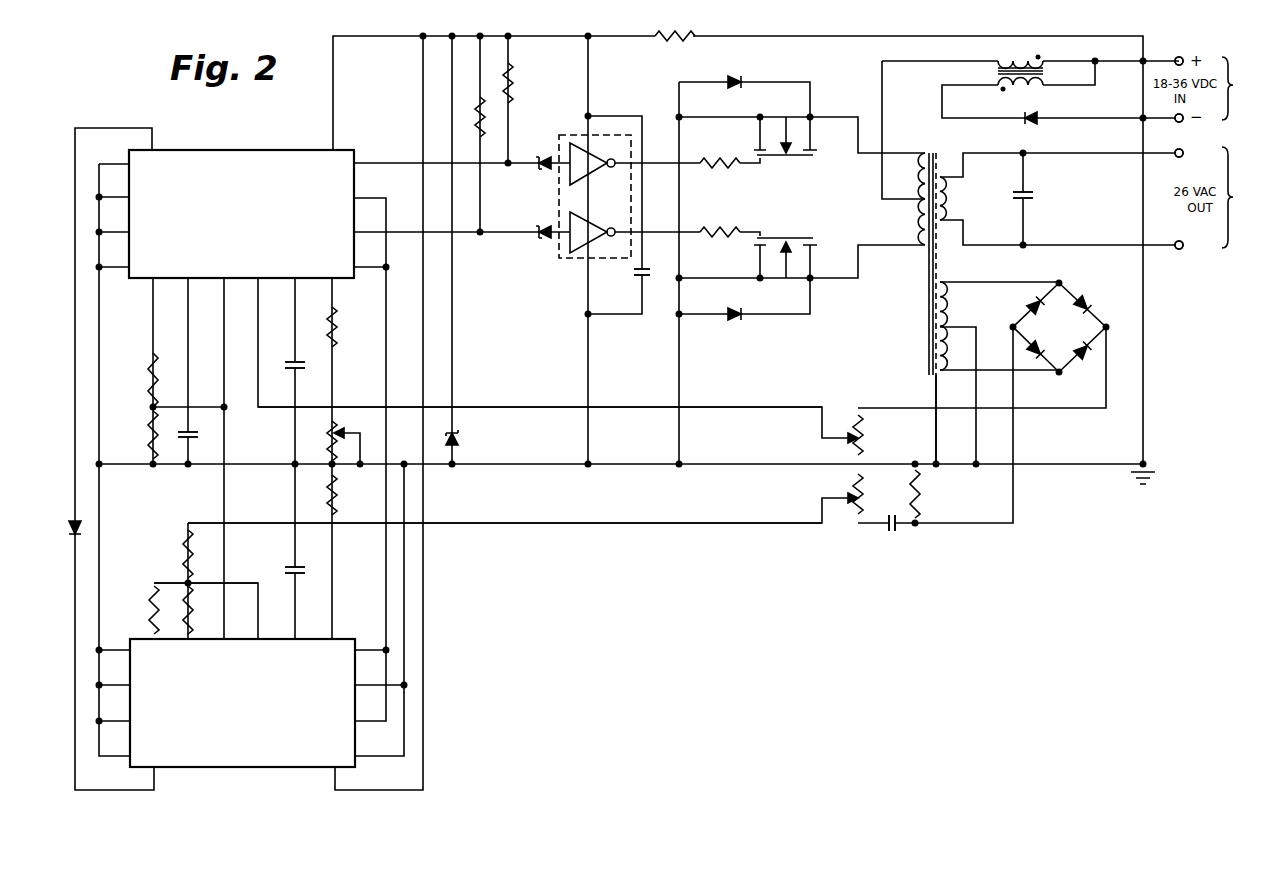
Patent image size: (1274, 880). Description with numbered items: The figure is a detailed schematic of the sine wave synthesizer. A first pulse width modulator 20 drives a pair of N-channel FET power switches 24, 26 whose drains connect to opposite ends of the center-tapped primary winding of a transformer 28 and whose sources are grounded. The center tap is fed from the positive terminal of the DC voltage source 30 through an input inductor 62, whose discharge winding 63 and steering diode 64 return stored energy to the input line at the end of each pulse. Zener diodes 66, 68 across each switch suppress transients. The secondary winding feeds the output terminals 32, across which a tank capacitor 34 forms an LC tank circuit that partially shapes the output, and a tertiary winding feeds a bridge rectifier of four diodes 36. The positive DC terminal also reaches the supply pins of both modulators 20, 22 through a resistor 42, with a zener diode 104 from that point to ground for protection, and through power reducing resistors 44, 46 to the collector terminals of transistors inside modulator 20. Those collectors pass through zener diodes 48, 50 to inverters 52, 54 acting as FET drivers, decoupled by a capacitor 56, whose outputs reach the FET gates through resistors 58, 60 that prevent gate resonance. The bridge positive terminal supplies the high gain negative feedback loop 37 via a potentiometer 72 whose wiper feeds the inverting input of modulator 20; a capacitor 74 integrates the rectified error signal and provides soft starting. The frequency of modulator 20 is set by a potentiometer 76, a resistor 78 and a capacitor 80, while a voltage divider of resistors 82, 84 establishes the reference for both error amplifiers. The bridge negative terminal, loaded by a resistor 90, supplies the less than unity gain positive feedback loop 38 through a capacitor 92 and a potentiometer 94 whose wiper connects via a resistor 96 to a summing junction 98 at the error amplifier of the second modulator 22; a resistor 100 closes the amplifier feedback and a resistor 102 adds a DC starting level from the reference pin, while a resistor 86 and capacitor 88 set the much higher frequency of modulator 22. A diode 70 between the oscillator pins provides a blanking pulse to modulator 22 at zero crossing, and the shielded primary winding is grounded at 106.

The first pulse width modulator 20 is at (224, 226).
The second pulse width modulator 22 is at (224, 711).
The FET power switch 24 is at (813, 95).
The FET power switch 26 is at (812, 296).
The transformer 28 is at (938, 165).
The DC voltage source 30 is at (1218, 89).
The output terminals 32 is at (1218, 198).
The tank capacitor 34 is at (1030, 200).
The bridge rectifier diodes 36 is at (1072, 338).
The negative feedback loop 37 is at (515, 405).
The positive feedback loop 38 is at (518, 525).
The resistor 42 is at (672, 42).
The power reducing resistor 44 is at (520, 70).
The power reducing resistor 46 is at (487, 105).
The zener diode 48 is at (538, 170).
The zener diode 50 is at (538, 240).
The inverter 52 is at (597, 170).
The inverter 54 is at (598, 223).
The capacitor 56 is at (633, 278).
The resistor 58 is at (728, 170).
The resistor 60 is at (735, 228).
The input inductor 62 is at (1020, 58).
The discharge winding 63 is at (1033, 80).
The steering diode 64 is at (1022, 113).
The zener diode 66 is at (743, 77).
The zener diode 68 is at (735, 322).
The diode 70 is at (82, 528).
The potentiometer 72 is at (865, 425).
The capacitor 74 is at (207, 435).
The potentiometer 76 is at (336, 425).
The resistor 78 is at (340, 330).
The capacitor 80 is at (293, 372).
The resistor 82 is at (150, 440).
The resistor 84 is at (150, 360).
The resistor 86 is at (340, 490).
The capacitor 88 is at (293, 568).
The resistor 90 is at (925, 490).
The capacitor 92 is at (887, 533).
The potentiometer 94 is at (862, 492).
The resistor 96 is at (185, 535).
The summing junction 98 is at (188, 572).
The resistor 100 is at (190, 600).
The resistor 102 is at (152, 607).
The zener diode 104 is at (462, 440).
The shield ground connection 106 is at (935, 383).